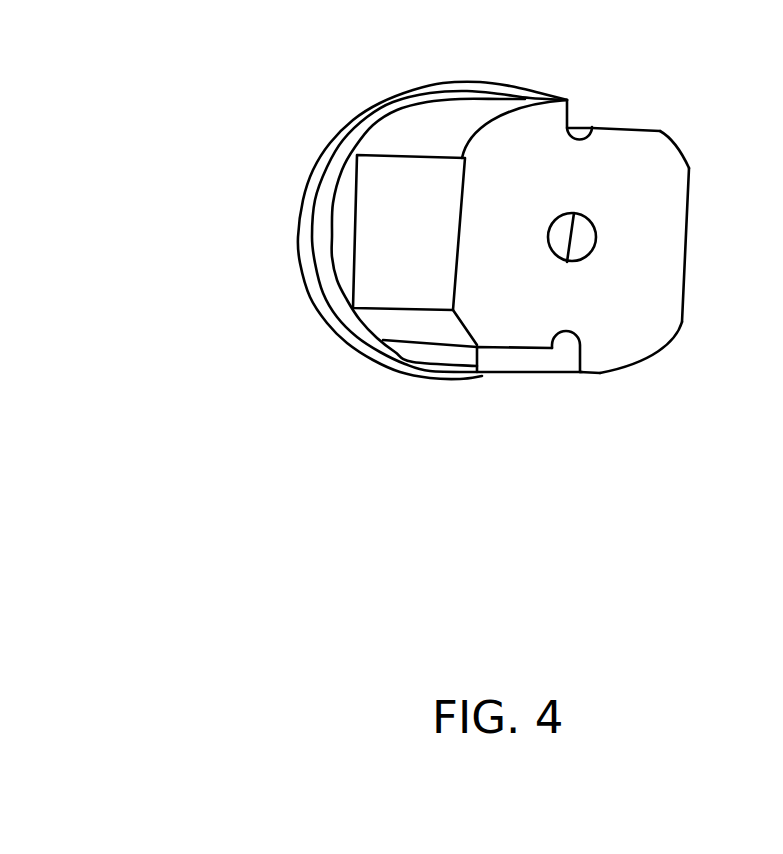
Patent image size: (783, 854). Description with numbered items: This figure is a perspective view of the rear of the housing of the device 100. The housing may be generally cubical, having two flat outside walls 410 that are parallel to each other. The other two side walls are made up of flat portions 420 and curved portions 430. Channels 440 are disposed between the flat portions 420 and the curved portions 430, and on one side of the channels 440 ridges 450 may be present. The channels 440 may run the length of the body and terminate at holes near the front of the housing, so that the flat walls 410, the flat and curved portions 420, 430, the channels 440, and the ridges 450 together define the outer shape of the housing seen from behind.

The detector assembly 100 is at (322, 119).
The flat outside wall 410 is at (688, 248).
The flat portion 420 is at (656, 130).
The curved portion 430 is at (515, 99).
The channel 440 is at (581, 112).
The ridge 450 is at (538, 367).